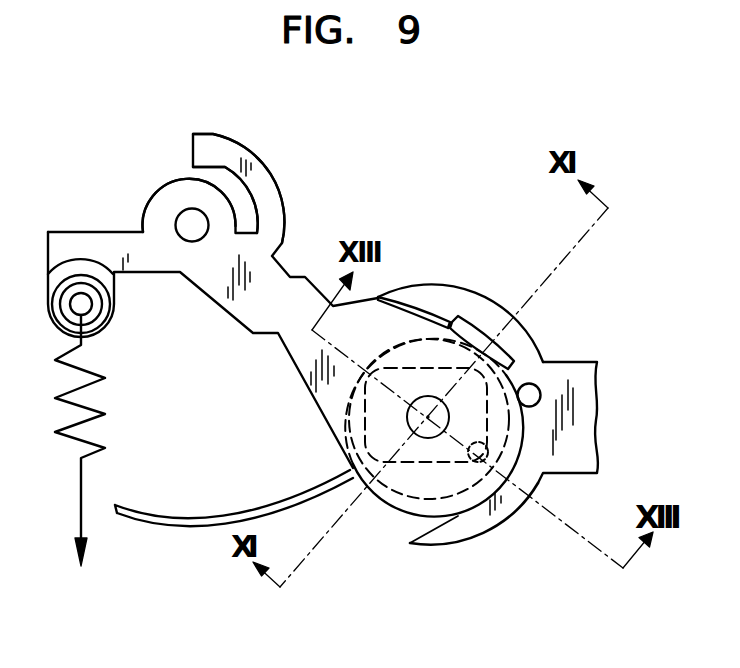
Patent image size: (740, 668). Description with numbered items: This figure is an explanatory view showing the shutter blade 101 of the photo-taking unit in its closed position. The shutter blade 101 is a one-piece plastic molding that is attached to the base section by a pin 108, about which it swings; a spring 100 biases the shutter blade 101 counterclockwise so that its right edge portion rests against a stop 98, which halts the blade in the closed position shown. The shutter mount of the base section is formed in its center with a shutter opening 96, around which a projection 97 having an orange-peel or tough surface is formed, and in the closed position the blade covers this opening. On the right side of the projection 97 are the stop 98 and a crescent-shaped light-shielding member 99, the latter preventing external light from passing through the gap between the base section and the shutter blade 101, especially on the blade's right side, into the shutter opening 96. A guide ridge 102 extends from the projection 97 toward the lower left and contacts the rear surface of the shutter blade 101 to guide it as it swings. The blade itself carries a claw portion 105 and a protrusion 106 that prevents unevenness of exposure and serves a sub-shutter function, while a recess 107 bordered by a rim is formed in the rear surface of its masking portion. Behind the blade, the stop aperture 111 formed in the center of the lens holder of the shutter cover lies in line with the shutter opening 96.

The shutter opening 96 is at (512, 473).
The projection 97 is at (418, 352).
The stop 98 is at (541, 396).
The light-shielding member 99 is at (458, 298).
The spring 100 is at (98, 441).
The shutter blade 101 is at (313, 243).
The guide ridge 102 is at (197, 525).
The claw portion 105 is at (205, 153).
The protrusion 106 is at (497, 352).
The recess 107 is at (378, 494).
The pin 108 is at (187, 223).
The stop aperture 111 is at (427, 440).